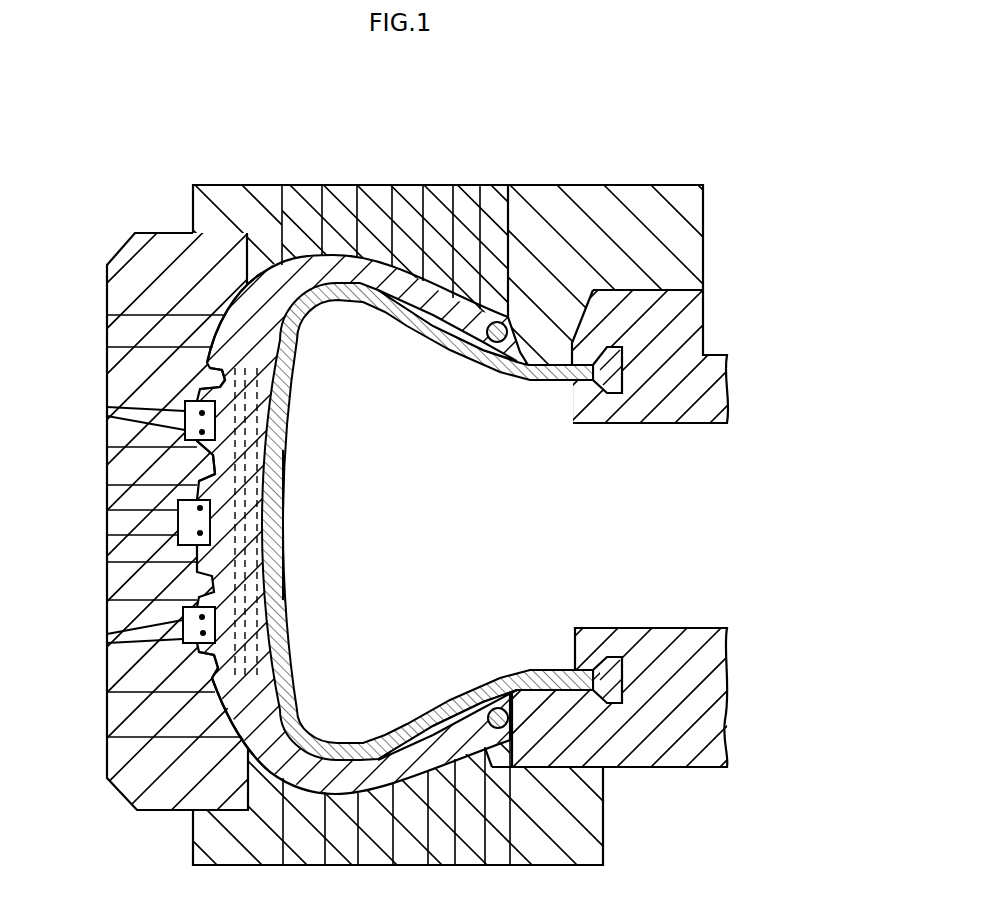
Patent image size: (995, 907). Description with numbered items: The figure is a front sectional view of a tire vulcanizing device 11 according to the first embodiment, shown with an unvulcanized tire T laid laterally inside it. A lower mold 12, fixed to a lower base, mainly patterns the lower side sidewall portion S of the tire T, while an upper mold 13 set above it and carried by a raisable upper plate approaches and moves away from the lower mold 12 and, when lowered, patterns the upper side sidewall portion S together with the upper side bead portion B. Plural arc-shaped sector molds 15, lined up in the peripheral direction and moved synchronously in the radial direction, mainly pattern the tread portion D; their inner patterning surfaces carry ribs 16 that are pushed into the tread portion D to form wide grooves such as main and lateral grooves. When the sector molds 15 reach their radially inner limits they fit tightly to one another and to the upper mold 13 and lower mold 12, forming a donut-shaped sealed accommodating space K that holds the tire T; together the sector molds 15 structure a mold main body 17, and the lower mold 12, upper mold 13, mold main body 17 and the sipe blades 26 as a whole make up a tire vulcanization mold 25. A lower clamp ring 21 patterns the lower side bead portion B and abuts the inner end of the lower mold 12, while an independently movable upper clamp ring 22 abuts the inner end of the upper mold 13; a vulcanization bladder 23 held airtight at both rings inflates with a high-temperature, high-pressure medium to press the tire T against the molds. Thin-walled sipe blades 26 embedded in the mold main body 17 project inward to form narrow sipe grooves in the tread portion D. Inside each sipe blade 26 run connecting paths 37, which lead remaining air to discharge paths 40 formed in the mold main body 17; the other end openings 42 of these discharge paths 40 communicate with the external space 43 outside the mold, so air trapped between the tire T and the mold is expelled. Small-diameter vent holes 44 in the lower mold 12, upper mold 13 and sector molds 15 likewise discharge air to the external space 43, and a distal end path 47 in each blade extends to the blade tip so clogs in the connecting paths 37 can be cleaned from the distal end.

The tire vulcanizing device 11 is at (497, 453).
The lower mold 12 is at (560, 846).
The upper mold 13 is at (550, 205).
The sector mold 15 is at (148, 258).
The rib 16 is at (290, 376).
The mold main body 17 is at (112, 810).
The lower clamp ring 21 is at (662, 650).
The upper clamp ring 22 is at (642, 418).
The vulcanization bladder 23 is at (433, 352).
The tire vulcanization mold 25 is at (405, 185).
The sipe blade 26 is at (280, 412).
The connecting path 37 is at (192, 390).
The discharge path 40 is at (107, 403).
The other end opening 42 is at (108, 416).
The external space 43 is at (78, 540).
The vent hole 44 is at (280, 206).
The distal end path 47 is at (210, 520).
The unvulcanized tire T is at (497, 453).
The accommodating space K is at (402, 518).
The sidewall portion S is at (372, 306).
The bead portion B is at (494, 346).
The tread portion D is at (284, 556).